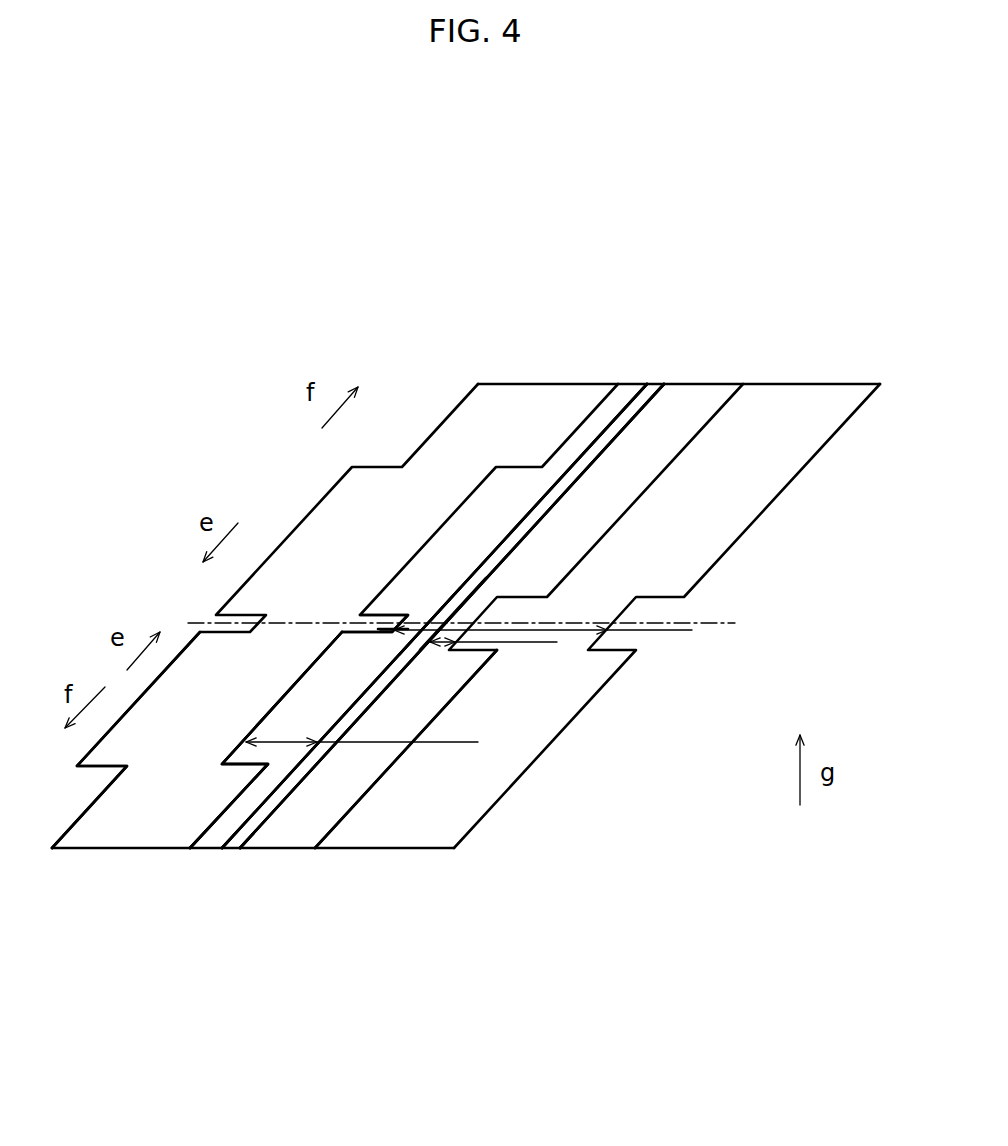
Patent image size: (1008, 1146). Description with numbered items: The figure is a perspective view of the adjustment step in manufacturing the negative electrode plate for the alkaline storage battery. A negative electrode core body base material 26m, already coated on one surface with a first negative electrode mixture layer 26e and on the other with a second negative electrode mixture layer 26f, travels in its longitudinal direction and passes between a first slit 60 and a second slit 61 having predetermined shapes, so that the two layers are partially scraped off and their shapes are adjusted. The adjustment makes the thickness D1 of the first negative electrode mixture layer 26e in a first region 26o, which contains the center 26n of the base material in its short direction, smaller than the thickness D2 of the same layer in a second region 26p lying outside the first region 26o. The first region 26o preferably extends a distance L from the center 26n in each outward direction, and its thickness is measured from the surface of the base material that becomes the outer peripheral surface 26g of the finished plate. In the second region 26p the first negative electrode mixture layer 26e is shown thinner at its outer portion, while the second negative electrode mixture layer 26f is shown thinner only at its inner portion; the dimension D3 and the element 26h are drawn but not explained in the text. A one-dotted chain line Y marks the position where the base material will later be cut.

The first slit 60 is at (528, 408).
The second slit 61 is at (793, 407).
The first negative electrode mixture layer 26e is at (216, 836).
The second negative electrode mixture layer 26f is at (303, 838).
The outer peripheral surface 26g is at (270, 792).
The second edge 26h is at (317, 765).
The negative electrode core body base material 26m is at (237, 836).
The center 26n is at (467, 597).
The first region 26o is at (418, 608).
The second region 26p is at (235, 707).
The one-dotted chain line Y is at (730, 625).
The distance L is at (371, 660).
The thickness of the first negative electrode mixture layer in the first region D1 is at (536, 645).
The thickness of the first negative electrode mixture layer in the second region D2 is at (366, 732).
The dimension D3 is at (493, 658).